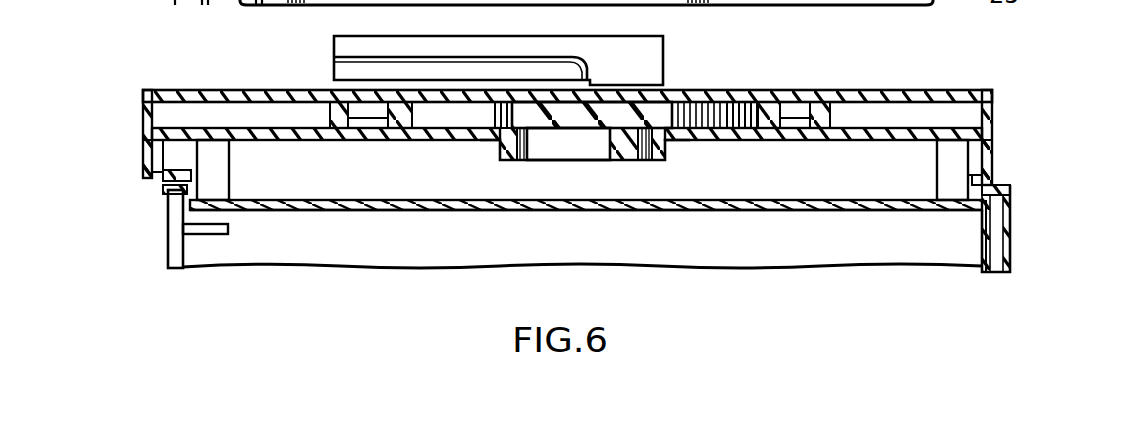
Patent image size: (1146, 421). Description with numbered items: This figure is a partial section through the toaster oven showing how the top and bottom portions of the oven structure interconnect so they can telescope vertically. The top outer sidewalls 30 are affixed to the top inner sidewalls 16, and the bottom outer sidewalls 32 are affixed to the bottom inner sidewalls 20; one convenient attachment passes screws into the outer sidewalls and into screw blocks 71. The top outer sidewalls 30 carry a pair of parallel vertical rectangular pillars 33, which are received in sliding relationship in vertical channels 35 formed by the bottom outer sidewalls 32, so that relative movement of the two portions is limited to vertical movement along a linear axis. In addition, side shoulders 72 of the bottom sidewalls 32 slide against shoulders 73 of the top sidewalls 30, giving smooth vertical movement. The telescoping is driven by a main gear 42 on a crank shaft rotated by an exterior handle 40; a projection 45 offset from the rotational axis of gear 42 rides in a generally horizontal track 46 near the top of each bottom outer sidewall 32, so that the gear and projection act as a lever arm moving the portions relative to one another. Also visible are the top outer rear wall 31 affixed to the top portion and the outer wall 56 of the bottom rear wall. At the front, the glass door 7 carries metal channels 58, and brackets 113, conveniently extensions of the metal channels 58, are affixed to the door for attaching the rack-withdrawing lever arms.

The door 7 is at (167, 254).
The top inner sidewalls 16 is at (784, 200).
The bottom inner sidewalls 20 is at (843, 212).
The top outer sidewalls 30 is at (890, 90).
The top outer rear wall 31 is at (1011, 240).
The bottom outer sidewalls 32 is at (908, 141).
The pillars 33 is at (356, 138).
The channels 35 is at (374, 130).
The handle 40 is at (664, 52).
The main gear 42 is at (746, 100).
The projection 45 is at (620, 160).
The track 46 is at (529, 161).
The outer wall 56 is at (983, 258).
The metal channels 58 is at (166, 206).
The screw blocks 71 is at (231, 182).
The side shoulders 72 is at (158, 172).
The shoulders 73 is at (148, 160).
The brackets 113 is at (210, 234).